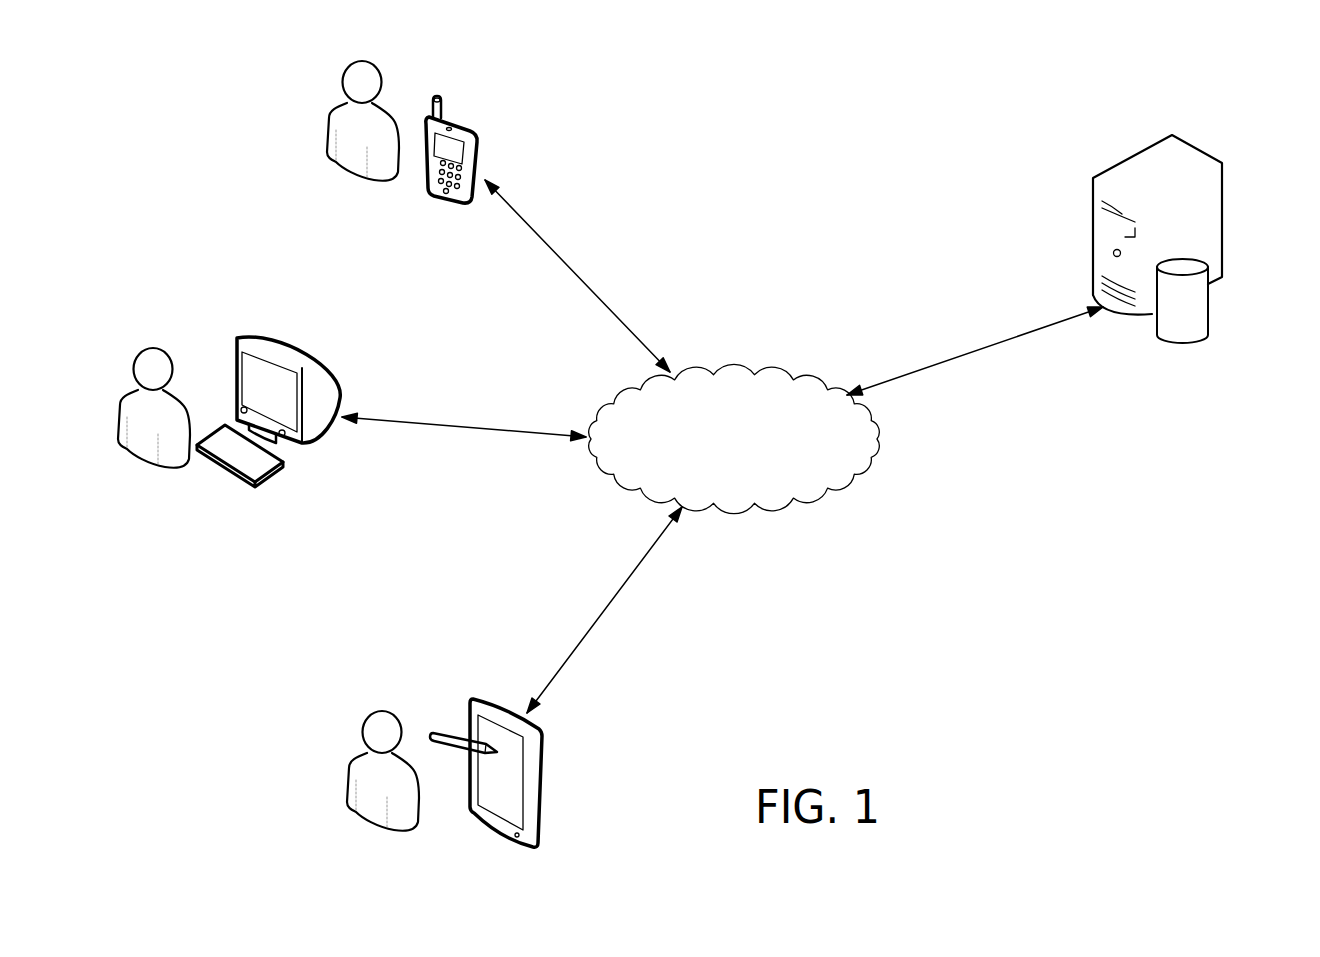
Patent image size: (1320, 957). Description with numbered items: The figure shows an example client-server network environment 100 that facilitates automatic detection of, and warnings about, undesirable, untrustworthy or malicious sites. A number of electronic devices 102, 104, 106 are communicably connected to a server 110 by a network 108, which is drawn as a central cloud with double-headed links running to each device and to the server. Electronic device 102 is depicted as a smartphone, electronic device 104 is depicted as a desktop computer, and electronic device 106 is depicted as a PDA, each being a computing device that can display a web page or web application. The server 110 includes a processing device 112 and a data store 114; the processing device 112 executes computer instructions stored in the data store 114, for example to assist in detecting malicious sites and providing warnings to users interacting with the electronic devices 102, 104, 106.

The network environment 100 is at (850, 108).
The electronic device 102 is at (465, 120).
The electronic device 104 is at (305, 347).
The electronic device 106 is at (477, 702).
The network 108 is at (730, 370).
The server 110 is at (1168, 231).
The processing device 112 is at (1195, 143).
The data store 114 is at (1210, 313).